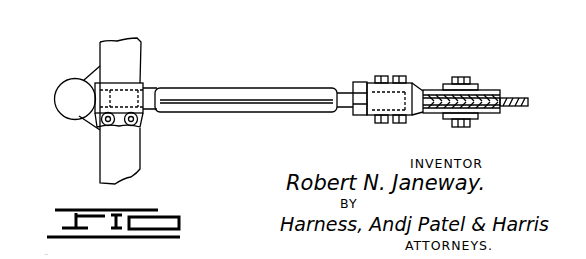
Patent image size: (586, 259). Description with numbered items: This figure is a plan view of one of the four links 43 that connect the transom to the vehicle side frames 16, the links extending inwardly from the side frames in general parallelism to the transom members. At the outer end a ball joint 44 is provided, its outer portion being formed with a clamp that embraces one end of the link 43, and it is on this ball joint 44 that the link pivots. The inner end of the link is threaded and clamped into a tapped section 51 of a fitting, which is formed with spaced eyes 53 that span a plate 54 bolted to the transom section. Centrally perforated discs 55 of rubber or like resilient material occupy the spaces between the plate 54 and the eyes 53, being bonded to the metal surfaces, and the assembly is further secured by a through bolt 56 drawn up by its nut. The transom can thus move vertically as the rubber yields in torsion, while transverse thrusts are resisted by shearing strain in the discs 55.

The side frame 16 is at (123, 22).
The ball joint 44 is at (63, 84).
The link 43 is at (272, 72).
The tapped section 51 is at (371, 82).
The spaced eyes 53 is at (424, 90).
The plate 54 is at (512, 99).
The centrally perforated discs 55 is at (438, 113).
The through bolt 56 is at (466, 78).